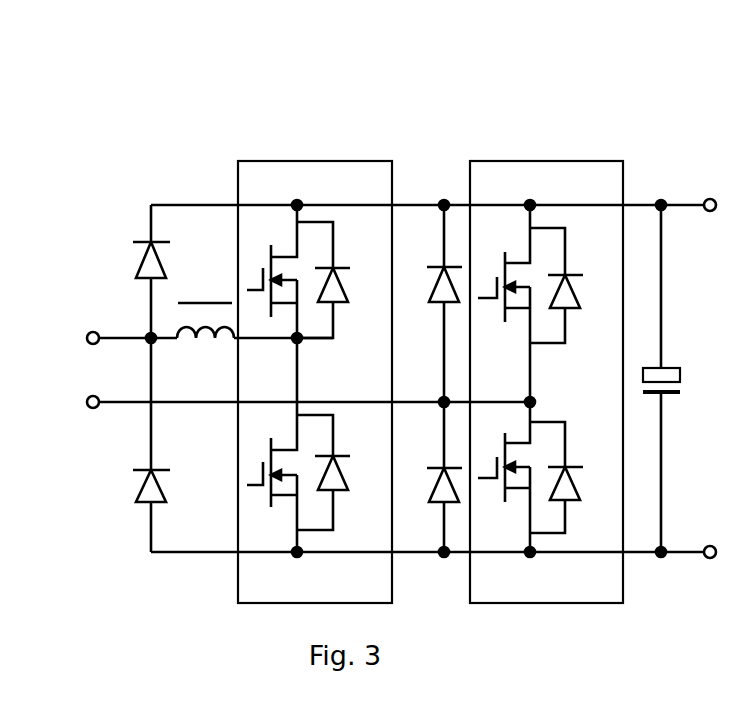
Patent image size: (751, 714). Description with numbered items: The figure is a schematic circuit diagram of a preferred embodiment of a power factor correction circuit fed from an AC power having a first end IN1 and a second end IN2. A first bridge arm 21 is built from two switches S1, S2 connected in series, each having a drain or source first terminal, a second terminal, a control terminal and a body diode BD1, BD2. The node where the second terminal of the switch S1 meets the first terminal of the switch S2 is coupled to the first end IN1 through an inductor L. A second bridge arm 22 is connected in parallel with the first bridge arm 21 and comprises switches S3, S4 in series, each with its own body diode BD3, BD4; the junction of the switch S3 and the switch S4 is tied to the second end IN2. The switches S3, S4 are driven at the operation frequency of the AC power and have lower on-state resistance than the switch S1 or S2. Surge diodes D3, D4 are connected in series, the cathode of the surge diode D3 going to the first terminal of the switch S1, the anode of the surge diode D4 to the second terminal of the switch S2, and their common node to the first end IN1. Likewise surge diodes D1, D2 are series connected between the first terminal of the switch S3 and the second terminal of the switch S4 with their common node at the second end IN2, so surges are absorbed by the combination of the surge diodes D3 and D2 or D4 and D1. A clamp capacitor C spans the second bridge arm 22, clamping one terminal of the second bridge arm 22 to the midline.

The first bridge arm 21 is at (314, 161).
The second bridge arm 22 is at (545, 161).
The first end of the AC power IN1 is at (107, 330).
The second end of the AC power IN2 is at (286, 395).
The inductor L is at (255, 307).
The clamp capacitor C is at (673, 378).
The surge diode D1 is at (434, 301).
The surge diode D2 is at (434, 479).
The surge diode D3 is at (135, 256).
The surge diode D4 is at (135, 483).
The switch S1 is at (271, 303).
The switch S2 is at (271, 477).
The switch S3 is at (503, 303).
The switch S4 is at (503, 477).
The body diode BD1 is at (338, 280).
The body diode BD2 is at (338, 472).
The body diode BD3 is at (570, 285).
The body diode BD4 is at (570, 477).